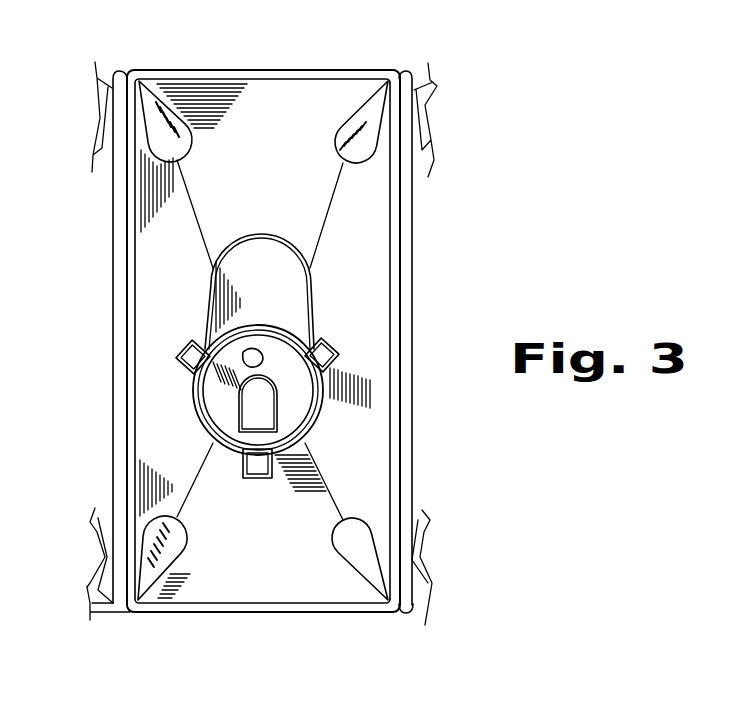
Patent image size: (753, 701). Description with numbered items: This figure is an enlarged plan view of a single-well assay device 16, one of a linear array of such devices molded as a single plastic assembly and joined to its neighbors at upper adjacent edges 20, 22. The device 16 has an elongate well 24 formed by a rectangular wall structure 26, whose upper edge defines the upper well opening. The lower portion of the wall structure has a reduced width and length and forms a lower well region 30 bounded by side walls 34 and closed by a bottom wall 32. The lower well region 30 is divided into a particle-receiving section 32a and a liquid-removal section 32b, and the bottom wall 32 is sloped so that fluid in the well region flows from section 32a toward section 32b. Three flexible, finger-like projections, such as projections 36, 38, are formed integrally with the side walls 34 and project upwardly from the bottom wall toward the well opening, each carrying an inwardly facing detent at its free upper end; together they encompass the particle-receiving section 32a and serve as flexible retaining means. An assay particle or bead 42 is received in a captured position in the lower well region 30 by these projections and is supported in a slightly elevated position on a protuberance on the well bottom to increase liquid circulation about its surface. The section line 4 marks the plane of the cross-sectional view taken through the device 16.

The section line 4 is at (262, 33).
The assay device 16 is at (329, 64).
The upper adjacent edge 20 is at (388, 573).
The upper adjacent edge 22 is at (410, 577).
The elongate well 24 is at (390, 250).
The rectangular wall structure 26 is at (238, 93).
The lower well region 30 is at (386, 420).
The bottom wall 32 is at (271, 237).
The particle-receiving section 32a is at (262, 356).
The liquid-removal section 32b is at (287, 285).
The side walls 34 is at (187, 267).
The flexible finger-like projection 36 is at (262, 470).
The flexible finger-like projection 38 is at (323, 353).
The assay particle or bead 42 is at (217, 395).